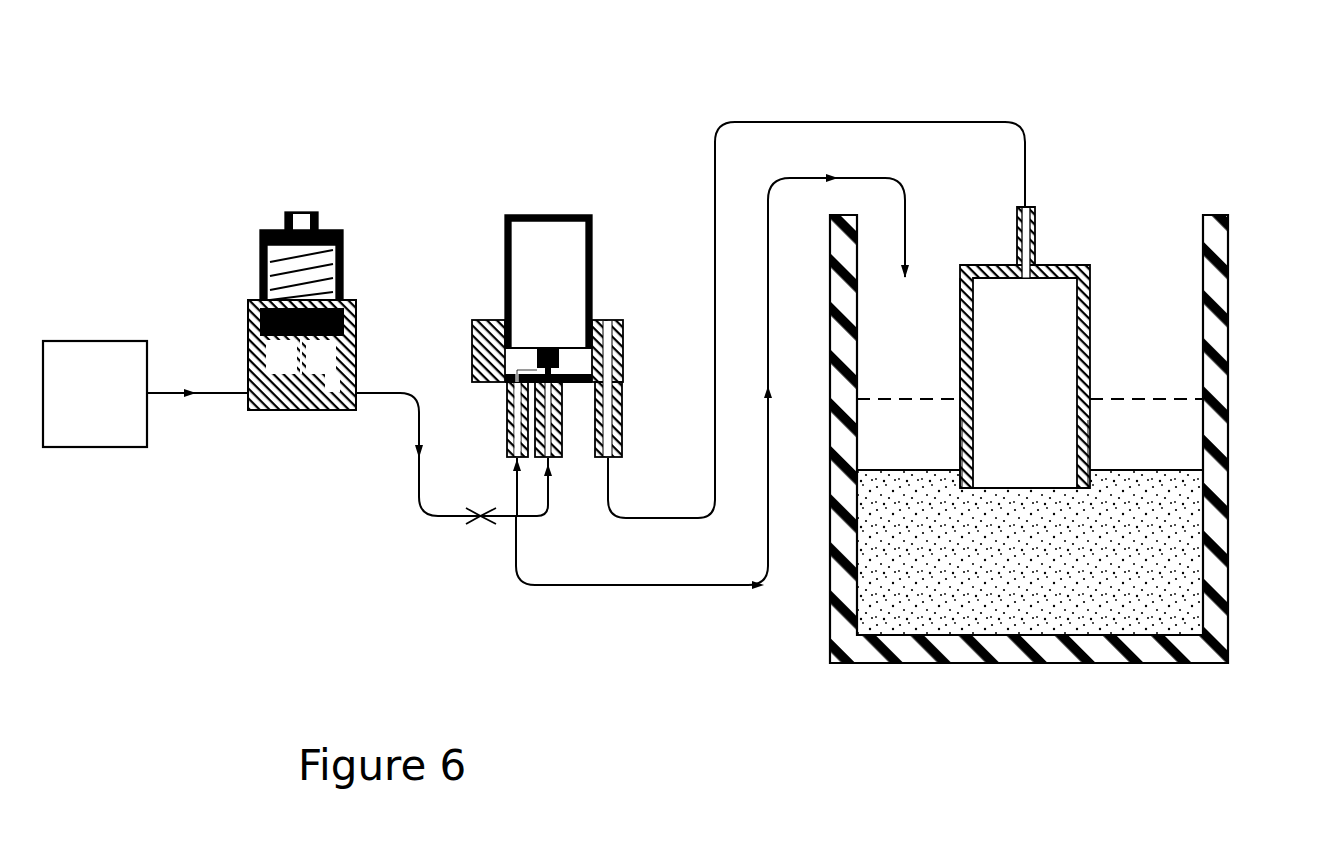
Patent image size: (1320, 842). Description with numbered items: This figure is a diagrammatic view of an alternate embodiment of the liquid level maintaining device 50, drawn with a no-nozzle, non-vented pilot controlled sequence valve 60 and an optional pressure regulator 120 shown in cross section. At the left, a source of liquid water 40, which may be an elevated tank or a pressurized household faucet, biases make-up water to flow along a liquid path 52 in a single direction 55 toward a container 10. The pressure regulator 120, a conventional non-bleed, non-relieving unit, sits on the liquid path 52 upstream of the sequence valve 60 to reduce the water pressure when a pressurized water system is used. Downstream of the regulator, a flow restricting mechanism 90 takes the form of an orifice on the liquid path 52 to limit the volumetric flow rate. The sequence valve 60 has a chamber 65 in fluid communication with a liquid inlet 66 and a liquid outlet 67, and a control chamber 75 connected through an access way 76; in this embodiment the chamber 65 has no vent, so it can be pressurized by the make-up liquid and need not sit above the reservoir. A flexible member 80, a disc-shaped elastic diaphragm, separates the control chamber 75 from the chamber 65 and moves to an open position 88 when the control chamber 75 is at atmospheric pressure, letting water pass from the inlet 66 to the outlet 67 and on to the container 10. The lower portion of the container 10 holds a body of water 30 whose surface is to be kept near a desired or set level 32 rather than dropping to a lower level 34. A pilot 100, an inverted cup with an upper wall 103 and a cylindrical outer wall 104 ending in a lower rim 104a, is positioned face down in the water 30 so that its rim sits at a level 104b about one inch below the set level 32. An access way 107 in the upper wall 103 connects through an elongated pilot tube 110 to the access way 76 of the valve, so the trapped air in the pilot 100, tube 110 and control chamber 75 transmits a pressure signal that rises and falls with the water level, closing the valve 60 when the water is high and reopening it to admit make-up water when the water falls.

The container 10 is at (1222, 306).
The body of water 30 is at (1070, 590).
The desired or set level 32 is at (1175, 399).
The lower level 34 is at (1175, 470).
The source of liquid water 40 is at (95, 394).
The liquid level maintaining device 50 is at (642, 135).
The liquid path 52 is at (215, 393).
The flow direction 55 is at (413, 431).
The pilot controlled sequence valve 60 is at (550, 295).
The chamber 65 is at (510, 362).
The liquid inlet 66 is at (548, 408).
The liquid outlet 67 is at (507, 440).
The control chamber 75 is at (527, 260).
The access way 76 is at (608, 432).
The flexible member 80 is at (518, 348).
The open position 88 is at (578, 348).
The flow control or restricting mechanism 90 is at (463, 527).
The pilot 100 is at (1095, 362).
The upper wall 103 is at (1000, 265).
The cylindrical outer wall 104 is at (960, 360).
The lower rim 104a is at (960, 480).
The desired level of rim 104b is at (1090, 480).
The access way 107 is at (1023, 279).
The pilot tube 110 is at (885, 122).
The pressure regulator 120 is at (326, 230).